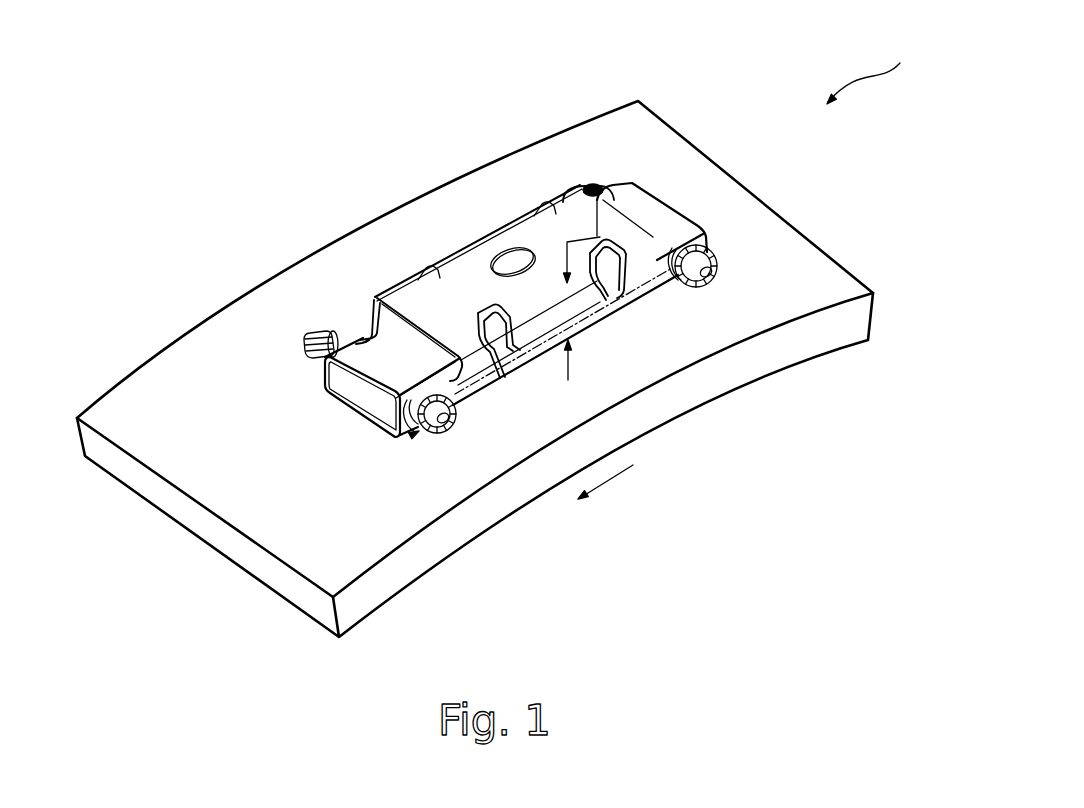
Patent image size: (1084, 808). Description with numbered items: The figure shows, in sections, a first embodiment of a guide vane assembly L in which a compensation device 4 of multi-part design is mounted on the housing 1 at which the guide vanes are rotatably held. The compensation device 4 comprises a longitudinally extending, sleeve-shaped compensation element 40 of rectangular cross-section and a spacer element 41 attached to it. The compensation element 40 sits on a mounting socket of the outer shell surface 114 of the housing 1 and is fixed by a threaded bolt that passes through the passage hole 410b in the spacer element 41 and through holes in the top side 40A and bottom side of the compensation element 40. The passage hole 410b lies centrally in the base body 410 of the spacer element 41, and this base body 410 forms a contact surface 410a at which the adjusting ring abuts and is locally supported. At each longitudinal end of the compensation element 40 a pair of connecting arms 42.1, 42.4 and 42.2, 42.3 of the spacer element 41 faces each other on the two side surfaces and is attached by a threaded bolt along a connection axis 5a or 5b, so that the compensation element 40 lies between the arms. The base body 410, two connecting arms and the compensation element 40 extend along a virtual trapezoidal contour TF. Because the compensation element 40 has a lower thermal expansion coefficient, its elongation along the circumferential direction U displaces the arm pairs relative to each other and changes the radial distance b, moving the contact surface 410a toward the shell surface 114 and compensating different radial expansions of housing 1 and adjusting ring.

The housing 1 is at (640, 100).
The compensation device 4 is at (592, 407).
The connection axis 5a is at (418, 432).
The connection axis 5b is at (718, 247).
The compensation element 40 is at (678, 223).
The top side 40A is at (327, 338).
The spacer element 41 is at (565, 175).
The connecting arm 42.1 is at (470, 397).
The connecting arm 42.2 is at (700, 283).
The connecting arm 42.3 is at (606, 190).
The connecting arm 42.4 is at (360, 327).
The shell surface 114 is at (297, 310).
The base body 410 is at (518, 205).
The contact surface 410a is at (628, 278).
The passage hole 410b is at (500, 245).
The trapezoidal contour TF is at (472, 338).
The guide vane assembly L is at (871, 72).
The circumferential direction U is at (605, 489).
The distance b is at (575, 308).